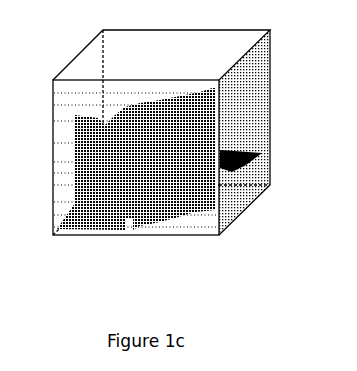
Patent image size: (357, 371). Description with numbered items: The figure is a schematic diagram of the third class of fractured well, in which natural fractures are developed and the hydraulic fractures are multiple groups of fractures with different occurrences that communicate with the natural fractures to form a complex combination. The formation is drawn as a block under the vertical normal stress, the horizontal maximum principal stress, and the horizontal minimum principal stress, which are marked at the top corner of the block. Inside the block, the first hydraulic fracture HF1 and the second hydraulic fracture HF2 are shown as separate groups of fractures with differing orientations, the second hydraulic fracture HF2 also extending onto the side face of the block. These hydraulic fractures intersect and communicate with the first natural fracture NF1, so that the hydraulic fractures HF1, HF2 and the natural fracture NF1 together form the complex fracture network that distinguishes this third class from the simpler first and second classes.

The first hydraulic fracture HF1 is at (188, 106).
The second hydraulic fracture HF2 is at (159, 159).
The first natural fracture NF1 is at (86, 172).